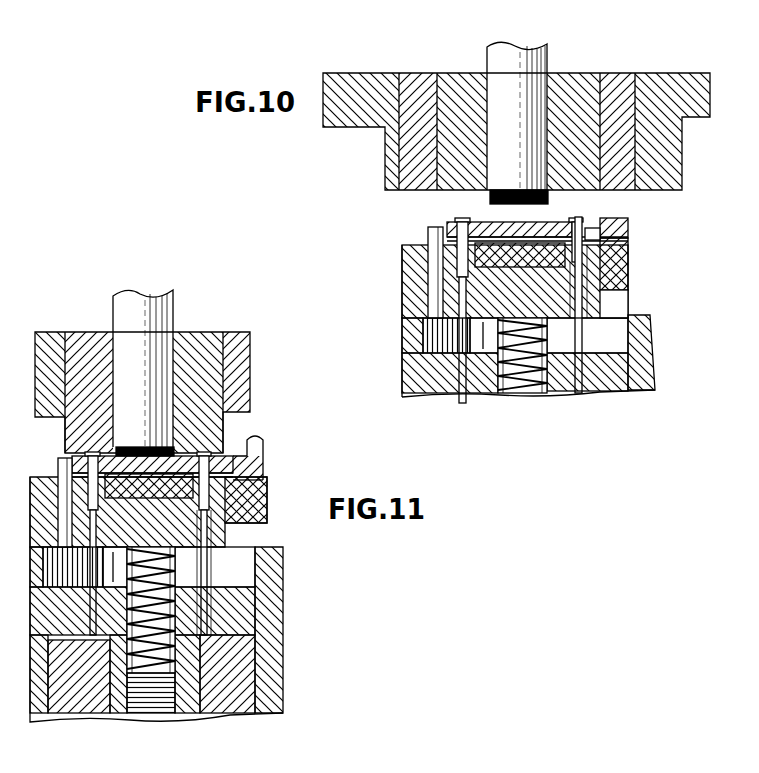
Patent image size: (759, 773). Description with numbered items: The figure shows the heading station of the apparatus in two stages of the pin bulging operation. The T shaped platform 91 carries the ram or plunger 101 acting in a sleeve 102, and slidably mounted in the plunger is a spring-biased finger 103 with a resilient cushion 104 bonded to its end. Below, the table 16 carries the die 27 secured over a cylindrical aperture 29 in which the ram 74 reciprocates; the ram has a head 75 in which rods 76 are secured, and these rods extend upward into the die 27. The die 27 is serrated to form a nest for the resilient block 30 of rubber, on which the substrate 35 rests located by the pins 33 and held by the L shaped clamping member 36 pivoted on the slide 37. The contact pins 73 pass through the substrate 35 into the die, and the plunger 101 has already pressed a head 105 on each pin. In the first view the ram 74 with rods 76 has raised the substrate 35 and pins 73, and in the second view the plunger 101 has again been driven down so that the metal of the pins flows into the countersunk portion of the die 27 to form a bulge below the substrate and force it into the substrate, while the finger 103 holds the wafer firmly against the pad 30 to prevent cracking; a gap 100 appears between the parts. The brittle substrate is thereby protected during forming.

In FIG. 10, the table 16 is at (640, 368).
In FIG. 11, the table 16 is at (270, 658).
In FIG. 10, the die 27 is at (563, 320).
In FIG. 11, the die 27 is at (192, 548).
In FIG. 10, the cylindrical aperture 29 is at (615, 330).
In FIG. 11, the cylindrical aperture 29 is at (250, 555).
In FIG. 10, the resilient block 30 is at (482, 268).
In FIG. 11, the resilient block 30 is at (130, 497).
In FIG. 10, the pins 33 is at (430, 235).
In FIG. 11, the pins 33 is at (58, 462).
In FIG. 10, the substrate 35 is at (549, 222).
In FIG. 11, the substrate 35 is at (185, 462).
In FIG. 10, the clamping member 36 is at (630, 222).
In FIG. 11, the clamping member 36 is at (265, 462).
In FIG. 10, the slide 37 is at (630, 254).
In FIG. 11, the slide 37 is at (268, 498).
In FIG. 10, the contact pins 73 is at (460, 260).
In FIG. 11, the contact pins 73 is at (92, 500).
In FIG. 11, the ram 74 is at (232, 700).
In FIG. 10, the head 75 is at (606, 392).
In FIG. 11, the head 75 is at (245, 614).
In FIG. 10, the rods 76 is at (577, 291).
In FIG. 11, the rods 76 is at (209, 566).
In FIG. 10, the platform 91 is at (685, 80).
In FIG. 11, the gap 100 is at (265, 478).
In FIG. 10, the ram 101 is at (574, 76).
In FIG. 11, the ram 101 is at (192, 332).
In FIG. 10, the sleeve 102 is at (620, 78).
In FIG. 11, the sleeve 102 is at (245, 343).
In FIG. 10, the finger 103 is at (512, 45).
In FIG. 11, the finger 103 is at (118, 308).
In FIG. 10, the cushion 104 is at (489, 197).
In FIG. 11, the cushion 104 is at (145, 451).
In FIG. 10, the head 105 is at (581, 217).